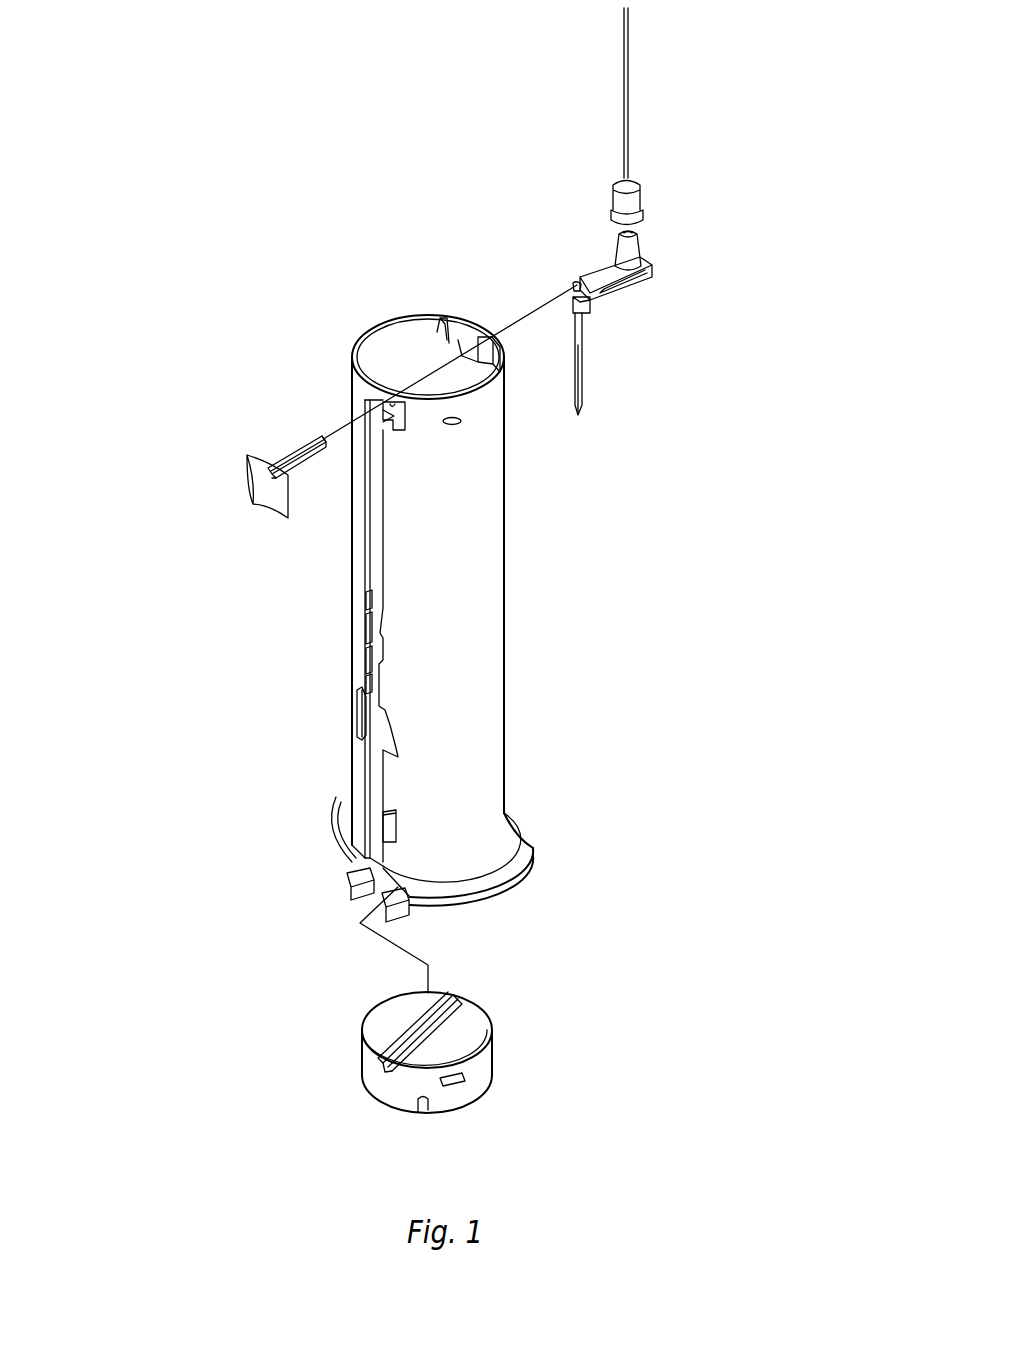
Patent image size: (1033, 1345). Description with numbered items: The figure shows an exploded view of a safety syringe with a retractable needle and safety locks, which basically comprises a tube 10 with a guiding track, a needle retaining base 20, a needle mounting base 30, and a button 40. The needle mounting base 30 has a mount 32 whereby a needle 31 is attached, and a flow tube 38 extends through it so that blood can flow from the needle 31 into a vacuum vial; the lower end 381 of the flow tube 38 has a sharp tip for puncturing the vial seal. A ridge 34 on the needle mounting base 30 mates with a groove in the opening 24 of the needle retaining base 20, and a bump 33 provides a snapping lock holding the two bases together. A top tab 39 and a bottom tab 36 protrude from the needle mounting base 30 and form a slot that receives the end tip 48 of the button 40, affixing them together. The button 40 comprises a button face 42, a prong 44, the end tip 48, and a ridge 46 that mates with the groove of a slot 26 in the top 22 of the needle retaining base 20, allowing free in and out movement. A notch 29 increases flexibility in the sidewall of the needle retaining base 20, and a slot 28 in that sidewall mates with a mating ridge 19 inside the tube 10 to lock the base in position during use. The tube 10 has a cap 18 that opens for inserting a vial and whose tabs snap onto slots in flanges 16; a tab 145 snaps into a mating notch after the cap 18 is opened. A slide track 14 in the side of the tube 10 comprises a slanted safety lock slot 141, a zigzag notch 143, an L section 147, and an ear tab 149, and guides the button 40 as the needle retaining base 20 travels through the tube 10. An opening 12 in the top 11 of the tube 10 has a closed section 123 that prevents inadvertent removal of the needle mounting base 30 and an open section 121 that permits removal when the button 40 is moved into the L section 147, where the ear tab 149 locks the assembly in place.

The tube 10 is at (438, 585).
The top 11 is at (397, 350).
The opening 12 is at (470, 300).
The open section 121 is at (442, 330).
The closed section 123 is at (510, 356).
The slide track 14 is at (380, 483).
The slanted safety lock slot 141 is at (365, 720).
The zigzag notch 143 is at (365, 665).
The tab 145 is at (352, 800).
The L section 147 is at (388, 405).
The ear tab 149 is at (397, 407).
The flanges 16 is at (508, 862).
The cap 18 is at (450, 910).
The mating ridge 19 is at (457, 423).
The needle retaining base 20 is at (399, 1074).
The top 22 is at (405, 1015).
The opening 24 is at (460, 1020).
The slot 26 is at (385, 1068).
The slot 28 is at (465, 1083).
The notch 29 is at (425, 1105).
The needle mounting base 30 is at (541, 238).
The needle 31 is at (633, 205).
The mount 32 is at (636, 254).
The bump 33 is at (650, 280).
The ridge 34 is at (622, 292).
The bottom tab 36 is at (592, 305).
The flow tube 38 is at (582, 340).
The end 381 is at (587, 390).
The top tab 39 is at (573, 284).
The button 40 is at (226, 455).
The button face 42 is at (262, 495).
The prong 44 is at (300, 450).
The ridge 46 is at (308, 458).
The end tip 48 is at (322, 438).